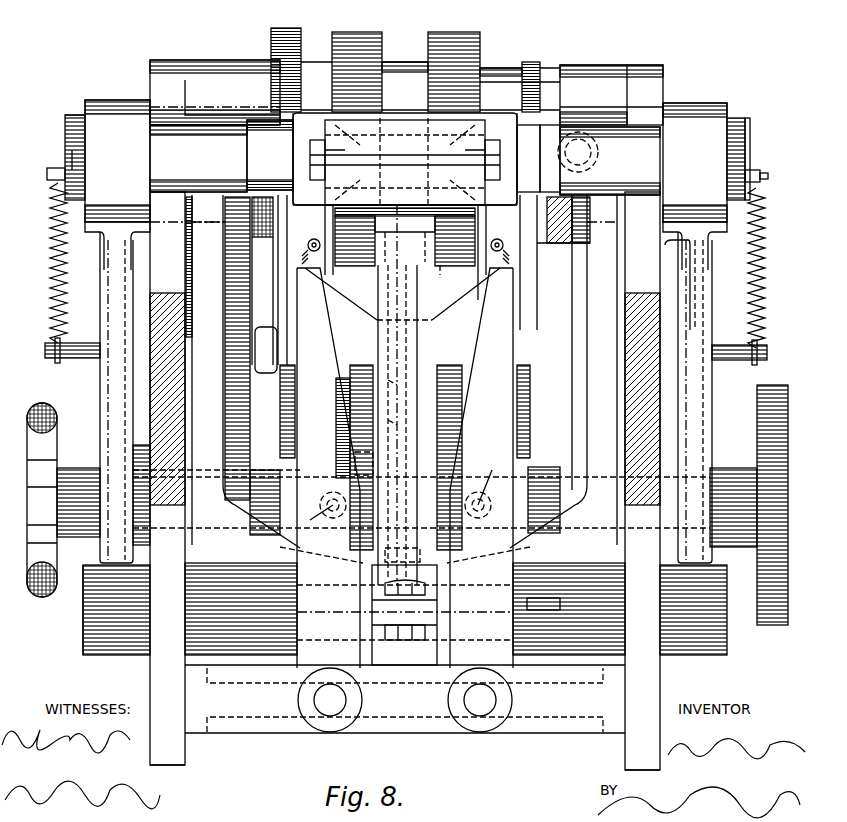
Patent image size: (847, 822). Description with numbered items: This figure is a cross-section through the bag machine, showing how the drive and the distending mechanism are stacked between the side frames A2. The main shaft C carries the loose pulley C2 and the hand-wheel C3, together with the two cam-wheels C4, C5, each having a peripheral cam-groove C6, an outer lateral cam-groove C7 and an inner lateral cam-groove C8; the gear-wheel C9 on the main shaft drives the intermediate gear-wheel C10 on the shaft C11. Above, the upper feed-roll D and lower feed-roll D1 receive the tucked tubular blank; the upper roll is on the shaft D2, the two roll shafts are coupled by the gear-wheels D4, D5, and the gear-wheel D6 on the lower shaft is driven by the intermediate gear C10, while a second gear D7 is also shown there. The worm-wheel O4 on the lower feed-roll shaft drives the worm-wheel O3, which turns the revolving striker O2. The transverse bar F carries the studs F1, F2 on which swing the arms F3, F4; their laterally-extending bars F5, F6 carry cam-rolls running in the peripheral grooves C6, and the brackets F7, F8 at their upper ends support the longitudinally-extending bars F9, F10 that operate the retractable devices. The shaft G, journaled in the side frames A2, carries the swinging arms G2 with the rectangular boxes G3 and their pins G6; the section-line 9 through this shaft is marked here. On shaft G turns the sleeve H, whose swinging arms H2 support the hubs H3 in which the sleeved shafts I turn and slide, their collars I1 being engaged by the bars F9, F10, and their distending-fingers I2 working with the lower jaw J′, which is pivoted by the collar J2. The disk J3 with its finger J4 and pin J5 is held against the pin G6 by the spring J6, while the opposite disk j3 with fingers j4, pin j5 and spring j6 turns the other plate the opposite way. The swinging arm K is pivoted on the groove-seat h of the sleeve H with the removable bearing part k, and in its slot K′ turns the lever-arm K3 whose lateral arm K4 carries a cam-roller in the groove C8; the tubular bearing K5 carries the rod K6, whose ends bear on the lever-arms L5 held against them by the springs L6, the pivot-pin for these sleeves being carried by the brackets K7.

The upper feed-roll D is at (454, 62).
The lower feed-roll D1 is at (445, 268).
The shaft D2 is at (489, 82).
The gear-wheel D4 is at (287, 30).
The gear-wheel D5 is at (250, 262).
The gear-wheel D6 is at (226, 238).
The gear D7 is at (332, 62).
The revolving striker O2 is at (585, 140).
The worm-wheel O3 is at (568, 142).
The worm-wheel O4 is at (560, 243).
The shaft G is at (83, 600).
The swinging arms G2 is at (406, 397).
The rectangular boxes G3 is at (406, 185).
The laterally-extending pins G6 is at (65, 168).
The sleeve H is at (515, 606).
The swinging arms H2 is at (404, 375).
The sleeves or hubs H3 is at (405, 160).
The sleeved shafts I is at (403, 156).
The collars I1 is at (528, 158).
The distending-fingers I2 is at (405, 159).
The lower distending plate or jaw J′ is at (405, 159).
The collar J2 is at (345, 158).
The disk j3 is at (75, 125).
The fingers j4 is at (70, 156).
The pin j5 is at (47, 175).
The spring j6 is at (50, 252).
The disk J3 is at (750, 125).
The projecting finger J4 is at (760, 172).
The projecting pin J5 is at (768, 180).
The spring J6 is at (765, 252).
The swinging arm K is at (397, 395).
The longitudinal slot K′ is at (397, 388).
The lever-arm K3 is at (397, 418).
The laterally-extending arm K4 is at (355, 460).
The tubular bearing K5 is at (405, 259).
The rod K6 is at (305, 274).
The brackets K7 is at (360, 268).
The removable part of the bearing k is at (415, 640).
The annular groove-seat h is at (437, 592).
The projecting lever-arms L5 is at (470, 282).
The springs L6 is at (402, 294).
The transverse bar or support F is at (405, 699).
The stud F1 is at (480, 700).
The stud F2 is at (330, 700).
The swinging arm F3 is at (481, 468).
The swinging arm F4 is at (328, 468).
The laterally-extending bar F5 is at (490, 477).
The laterally-extending bar F6 is at (311, 518).
The bracket F7 is at (540, 292).
The bracket F8 is at (278, 302).
The longitudinally-extending bar F9 is at (527, 262).
The longitudinally-extending bar F10 is at (200, 222).
The main shaft C is at (27, 505).
The loose pulley C2 is at (749, 505).
The hand-wheel C3 is at (55, 422).
The cam-wheel C4 is at (532, 380).
The cam-wheel C5 is at (360, 365).
The peripheral cam-groove C6 is at (462, 376).
The lateral cam-groove C7 is at (409, 449).
The lateral cam-groove C8 is at (355, 490).
The gear-wheel C9 is at (243, 498).
The intermediate gear-wheel C10 is at (236, 360).
The shaft C11 is at (187, 356).
The side frames A2 is at (405, 481).
The section-line 9 is at (45, 612).